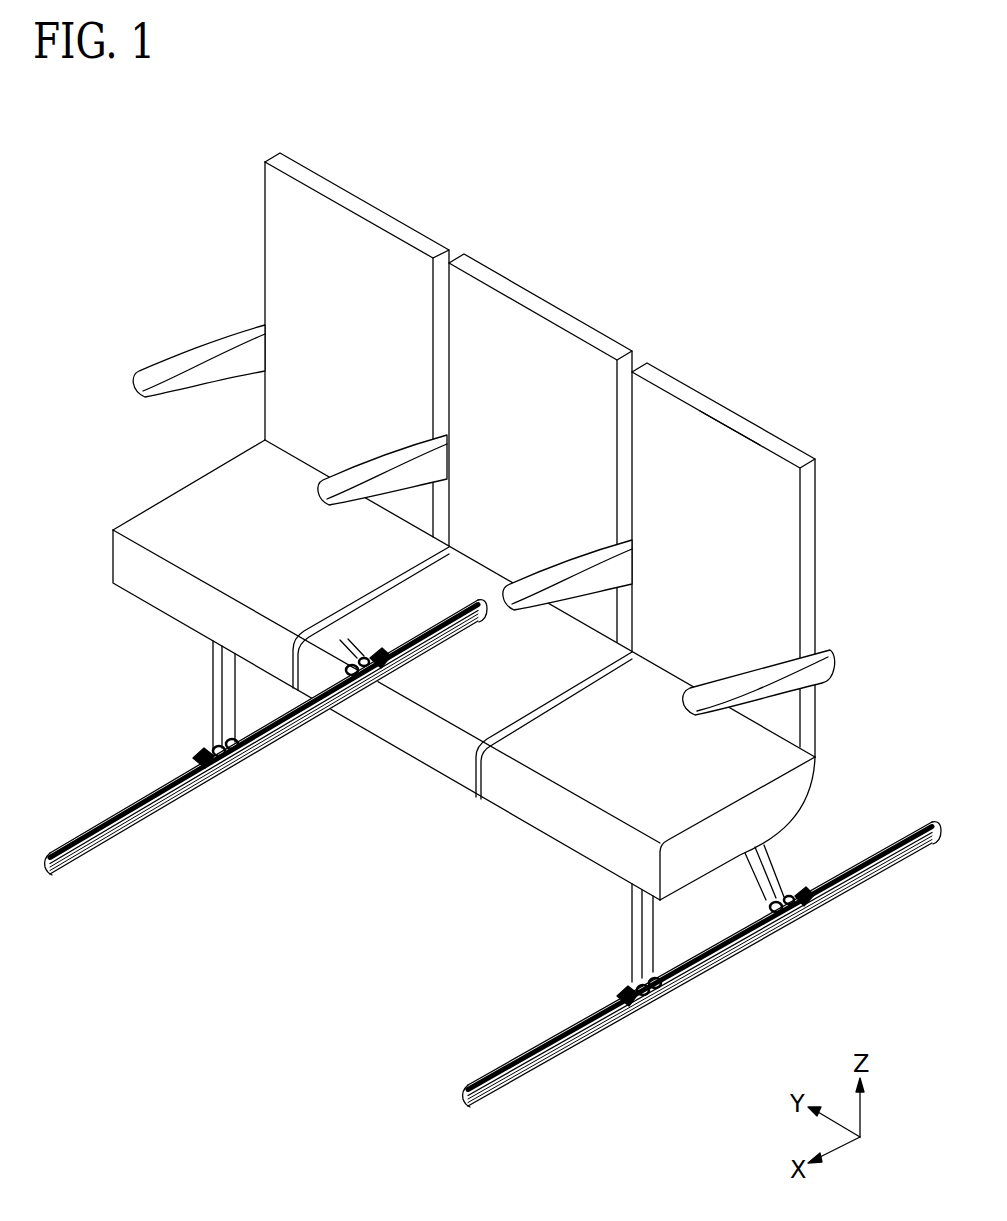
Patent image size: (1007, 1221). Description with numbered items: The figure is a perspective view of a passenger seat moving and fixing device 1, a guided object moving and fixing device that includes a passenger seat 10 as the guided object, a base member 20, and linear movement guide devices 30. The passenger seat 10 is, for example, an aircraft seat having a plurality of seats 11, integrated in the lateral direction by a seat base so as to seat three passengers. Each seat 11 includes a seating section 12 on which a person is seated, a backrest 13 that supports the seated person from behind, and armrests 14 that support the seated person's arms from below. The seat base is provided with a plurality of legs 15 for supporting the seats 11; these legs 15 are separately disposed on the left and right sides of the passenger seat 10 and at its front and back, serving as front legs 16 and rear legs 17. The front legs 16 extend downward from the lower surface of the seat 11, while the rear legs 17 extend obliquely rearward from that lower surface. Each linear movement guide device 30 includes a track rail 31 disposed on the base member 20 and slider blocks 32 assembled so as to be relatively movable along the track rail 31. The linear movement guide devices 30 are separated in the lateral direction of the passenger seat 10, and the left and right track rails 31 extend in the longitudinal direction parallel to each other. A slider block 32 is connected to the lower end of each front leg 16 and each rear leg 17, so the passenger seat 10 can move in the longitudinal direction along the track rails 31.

The passenger seat moving and fixing device 1 is at (158, 203).
The passenger seat 10 is at (253, 202).
The seat 11 is at (372, 184).
The seating section 12 is at (560, 810).
The backrest 13 is at (763, 430).
The armrest 14 is at (557, 563).
The leg 15 is at (515, 755).
The front leg 16 is at (213, 680).
The rear leg 17 is at (360, 652).
The base member 20 is at (267, 740).
The linear movement guide device 30 is at (174, 760).
The track rail 31 is at (296, 712).
The slider block 32 is at (233, 768).